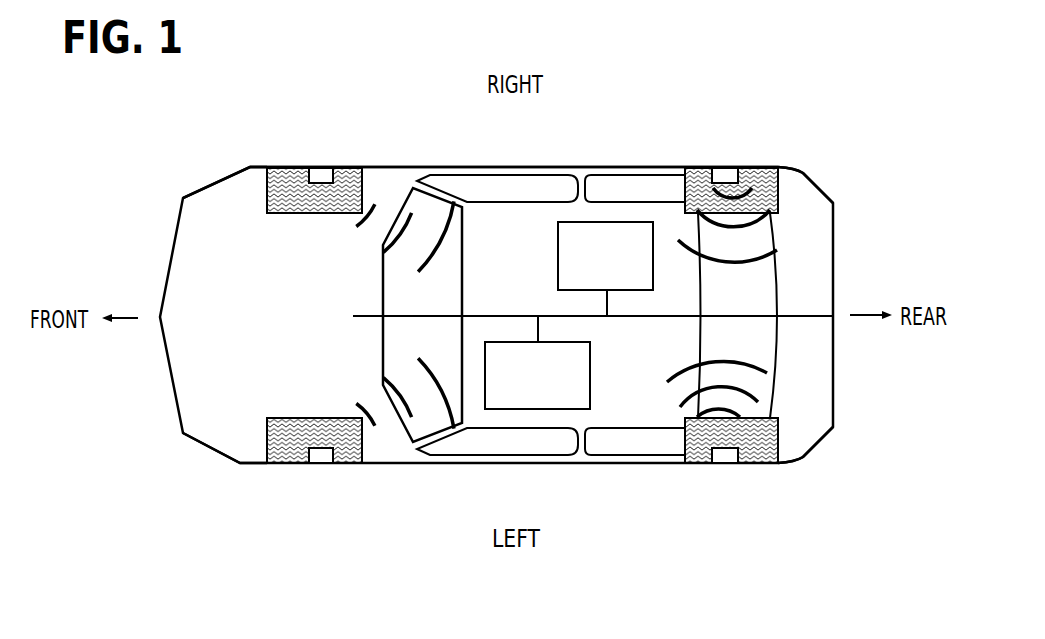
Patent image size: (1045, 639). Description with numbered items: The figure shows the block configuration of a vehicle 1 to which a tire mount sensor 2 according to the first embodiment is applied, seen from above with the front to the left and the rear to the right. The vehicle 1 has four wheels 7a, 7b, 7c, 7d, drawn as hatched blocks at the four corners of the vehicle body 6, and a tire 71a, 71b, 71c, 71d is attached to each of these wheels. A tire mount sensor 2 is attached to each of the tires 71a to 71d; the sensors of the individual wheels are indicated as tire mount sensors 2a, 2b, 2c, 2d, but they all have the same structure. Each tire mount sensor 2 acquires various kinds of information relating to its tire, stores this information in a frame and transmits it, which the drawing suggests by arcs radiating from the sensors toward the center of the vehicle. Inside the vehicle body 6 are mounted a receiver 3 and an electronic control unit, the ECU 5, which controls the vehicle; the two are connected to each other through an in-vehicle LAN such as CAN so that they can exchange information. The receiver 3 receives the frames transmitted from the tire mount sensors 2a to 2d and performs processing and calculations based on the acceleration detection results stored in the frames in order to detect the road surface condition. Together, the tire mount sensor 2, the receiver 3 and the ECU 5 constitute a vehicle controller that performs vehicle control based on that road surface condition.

The vehicle 1 is at (829, 163).
The tire mount sensor 2 is at (338, 160).
The tire mount sensor 2a is at (317, 170).
The tire mount sensor 2b is at (323, 464).
The tire mount sensor 2c is at (727, 168).
The tire mount sensor 2d is at (718, 460).
The receiver 3 is at (590, 375).
The electronic control unit (ECU) 5 is at (653, 255).
The vehicle body 6 is at (433, 168).
The wheel 7a is at (272, 160).
The wheel 7b is at (268, 472).
The wheel 7c is at (765, 159).
The wheel 7d is at (767, 471).
The tire 71a is at (267, 193).
The tire 71b is at (267, 432).
The tire 71c is at (778, 170).
The tire 71d is at (778, 453).